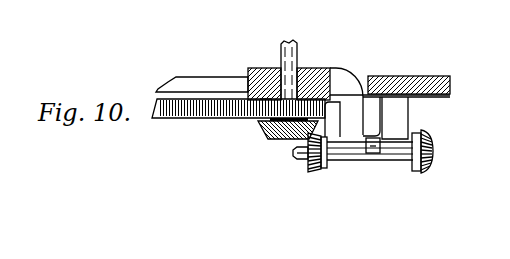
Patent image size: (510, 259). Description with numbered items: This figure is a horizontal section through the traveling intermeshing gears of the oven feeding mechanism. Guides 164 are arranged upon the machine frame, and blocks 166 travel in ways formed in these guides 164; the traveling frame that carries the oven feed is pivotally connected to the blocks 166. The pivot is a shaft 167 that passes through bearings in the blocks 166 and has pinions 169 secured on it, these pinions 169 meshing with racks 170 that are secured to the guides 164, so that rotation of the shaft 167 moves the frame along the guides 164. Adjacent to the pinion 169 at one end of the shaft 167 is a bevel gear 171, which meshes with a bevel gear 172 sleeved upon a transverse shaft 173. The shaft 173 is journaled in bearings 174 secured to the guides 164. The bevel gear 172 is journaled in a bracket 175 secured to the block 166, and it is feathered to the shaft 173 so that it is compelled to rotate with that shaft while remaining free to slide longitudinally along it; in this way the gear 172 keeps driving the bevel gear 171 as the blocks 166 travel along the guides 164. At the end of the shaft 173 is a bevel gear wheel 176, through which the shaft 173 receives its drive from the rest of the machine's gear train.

The guides 164 is at (201, 79).
The blocks 166 is at (314, 69).
The shaft 167 is at (291, 42).
The pinions 169 is at (266, 102).
The racks 170 is at (171, 116).
The bevel gear 171 is at (259, 131).
The bevel gear 172 is at (315, 173).
The shaft 173 is at (292, 158).
The bearings 174 is at (390, 114).
The bracket 175 is at (350, 138).
The bevel gear wheel 176 is at (425, 176).